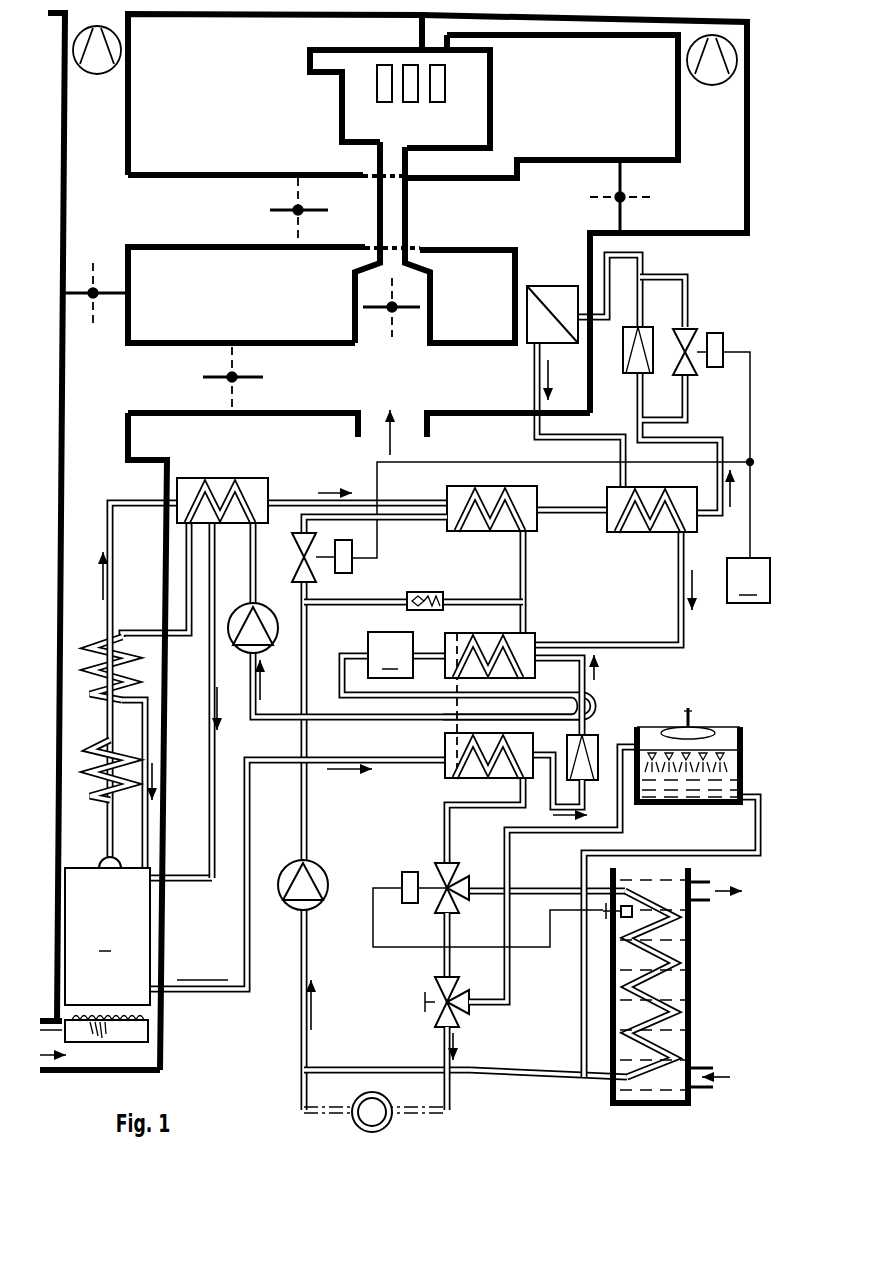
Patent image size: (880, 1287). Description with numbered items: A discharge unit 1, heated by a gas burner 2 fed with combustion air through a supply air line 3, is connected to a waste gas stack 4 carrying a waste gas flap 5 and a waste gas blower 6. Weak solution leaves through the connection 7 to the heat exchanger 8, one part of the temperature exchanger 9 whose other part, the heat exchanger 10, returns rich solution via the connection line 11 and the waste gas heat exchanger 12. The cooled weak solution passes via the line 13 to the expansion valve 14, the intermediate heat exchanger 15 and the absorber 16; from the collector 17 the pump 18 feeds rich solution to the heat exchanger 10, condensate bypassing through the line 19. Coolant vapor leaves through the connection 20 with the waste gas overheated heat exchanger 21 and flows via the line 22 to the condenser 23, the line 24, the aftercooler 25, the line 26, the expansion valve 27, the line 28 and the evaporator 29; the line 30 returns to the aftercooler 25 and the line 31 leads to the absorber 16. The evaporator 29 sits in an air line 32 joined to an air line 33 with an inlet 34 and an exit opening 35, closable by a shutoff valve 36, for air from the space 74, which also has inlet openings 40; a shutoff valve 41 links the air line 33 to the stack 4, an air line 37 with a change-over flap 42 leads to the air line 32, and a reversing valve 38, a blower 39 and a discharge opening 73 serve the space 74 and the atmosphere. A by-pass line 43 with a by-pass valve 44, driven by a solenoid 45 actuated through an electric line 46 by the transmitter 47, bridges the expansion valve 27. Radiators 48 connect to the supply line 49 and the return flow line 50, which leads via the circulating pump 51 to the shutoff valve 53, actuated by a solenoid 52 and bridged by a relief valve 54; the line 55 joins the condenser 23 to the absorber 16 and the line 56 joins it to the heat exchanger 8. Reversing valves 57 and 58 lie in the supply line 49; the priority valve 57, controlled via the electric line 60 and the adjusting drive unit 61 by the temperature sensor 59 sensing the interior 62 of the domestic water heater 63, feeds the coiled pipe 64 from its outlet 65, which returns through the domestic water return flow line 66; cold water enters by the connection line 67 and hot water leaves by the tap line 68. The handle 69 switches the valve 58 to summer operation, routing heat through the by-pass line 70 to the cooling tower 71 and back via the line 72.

The discharge unit 1 is at (107, 936).
The gas burner 2 is at (148, 1033).
The supply air line 3 is at (86, 1057).
The waste gas stack 4 is at (83, 745).
The waste gas flap 5 is at (110, 300).
The waste gas blower 6 is at (95, 74).
The connection 7 is at (201, 994).
The heat exchanger 8 is at (447, 782).
The temperature exchanger 9 is at (308, 605).
The heat exchanger 10 is at (254, 484).
The connection line 11 is at (148, 835).
The waste gas heat exchanger 12 is at (100, 636).
The line 13 is at (587, 795).
The expansion valve 14 is at (600, 745).
The intermediate heat exchanger 15 is at (597, 697).
The absorber 16 is at (530, 638).
The collector 17 is at (393, 663).
The pump 18 is at (263, 645).
The line 19 is at (213, 765).
The connection 20 is at (105, 855).
The waste gas overheated heat exchanger 21 is at (98, 800).
The line 22 is at (284, 505).
The condenser 23 is at (447, 492).
The line 24 is at (567, 516).
The aftercooler 25 is at (632, 534).
The line 26 is at (712, 516).
The expansion valve 27 is at (630, 375).
The line 28 is at (642, 260).
The evaporator 29 is at (533, 345).
The line 30 is at (533, 432).
The line 31 is at (683, 628).
The air line 32 is at (552, 292).
The air line 33 is at (460, 270).
The inlet 34 is at (426, 434).
The exit opening 35 is at (354, 292).
The shutoff valve 36 is at (416, 309).
The air line 37 is at (275, 178).
The reversing valve 38 is at (622, 205).
The blower 39 is at (712, 85).
The inlet openings 40 is at (436, 104).
The shutoff valve 41 is at (240, 380).
The change-over flap 42 is at (306, 210).
The by-pass line 43 is at (690, 298).
The by-pass valve 44 is at (695, 325).
The solenoid 45 is at (725, 340).
The electric line 46 is at (752, 466).
The transmitter 47 is at (748, 580).
The radiators 48 is at (362, 1102).
The supply line 49 is at (445, 1080).
The return flow line 50 is at (301, 1107).
The circulating pump 51 is at (318, 866).
The solenoid 52 is at (352, 568).
The shutoff valve 53 is at (297, 564).
The relief valve 54 is at (446, 590).
The line 55 is at (528, 581).
The line 56 is at (448, 700).
The reversing valve 57 is at (442, 862).
The reversing valve 58 is at (437, 1027).
The temperature sensor 59 is at (617, 921).
The electric line 60 is at (532, 950).
The adjusting drive unit 61 is at (407, 872).
The interior 62 is at (690, 945).
The domestic water heater 63 is at (640, 1106).
The coiled pipe 64 is at (672, 1018).
The outlet 65 is at (462, 873).
The domestic water return flow line 66 is at (525, 1079).
The connection line 67 is at (703, 1090).
The tap line 68 is at (709, 901).
The handle 69 is at (425, 998).
The by-pass line 70 is at (509, 868).
The cooling tower 71 is at (742, 758).
The line 72 is at (582, 1050).
The discharge opening 73 is at (304, 63).
The space 74 is at (398, 99).